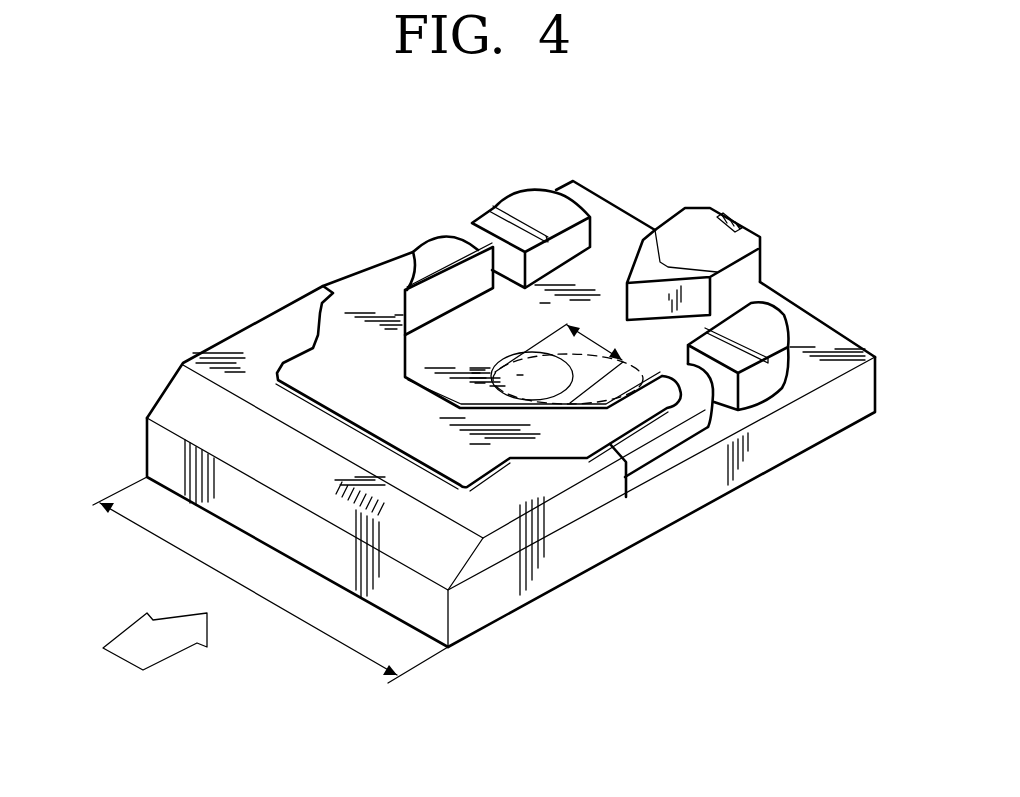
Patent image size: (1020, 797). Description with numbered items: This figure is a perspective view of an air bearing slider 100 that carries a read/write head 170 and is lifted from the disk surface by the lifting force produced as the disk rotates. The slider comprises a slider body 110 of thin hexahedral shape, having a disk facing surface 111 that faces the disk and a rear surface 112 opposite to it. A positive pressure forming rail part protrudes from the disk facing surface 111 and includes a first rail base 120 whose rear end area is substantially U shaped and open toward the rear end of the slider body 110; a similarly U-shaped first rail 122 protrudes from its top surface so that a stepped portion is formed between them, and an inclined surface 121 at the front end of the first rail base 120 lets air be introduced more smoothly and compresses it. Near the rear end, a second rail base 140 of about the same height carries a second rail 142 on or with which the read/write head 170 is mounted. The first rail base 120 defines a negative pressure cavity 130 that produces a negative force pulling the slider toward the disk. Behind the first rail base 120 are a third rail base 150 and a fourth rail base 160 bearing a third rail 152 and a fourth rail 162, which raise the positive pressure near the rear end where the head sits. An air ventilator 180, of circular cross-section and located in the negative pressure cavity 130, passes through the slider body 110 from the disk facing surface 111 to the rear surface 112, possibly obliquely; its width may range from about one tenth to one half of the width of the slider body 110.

The air bearing slider 100 is at (256, 206).
The slider body 110 is at (583, 563).
The disk facing surface 111 is at (803, 380).
The rear surface 112 is at (673, 527).
The first rail base 120 is at (256, 345).
The inclined surface 121 is at (187, 402).
The first rail 122 is at (366, 292).
The negative pressure cavity 130 is at (438, 332).
The second rail base 140 is at (746, 268).
The second rail 142 is at (690, 224).
The third rail base 150 is at (753, 393).
The third rail 152 is at (765, 326).
The fourth rail base 160 is at (472, 226).
The fourth rail 162 is at (537, 200).
The read/write head 170 is at (735, 220).
The air ventilator 180 is at (572, 378).